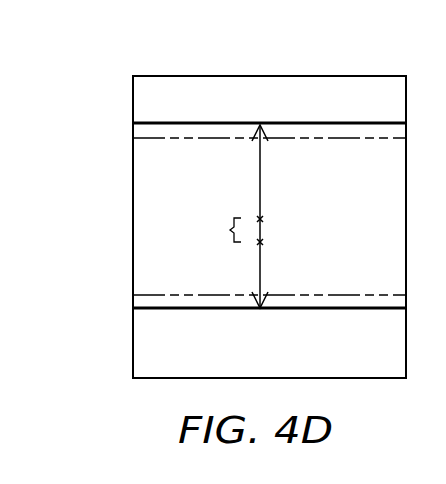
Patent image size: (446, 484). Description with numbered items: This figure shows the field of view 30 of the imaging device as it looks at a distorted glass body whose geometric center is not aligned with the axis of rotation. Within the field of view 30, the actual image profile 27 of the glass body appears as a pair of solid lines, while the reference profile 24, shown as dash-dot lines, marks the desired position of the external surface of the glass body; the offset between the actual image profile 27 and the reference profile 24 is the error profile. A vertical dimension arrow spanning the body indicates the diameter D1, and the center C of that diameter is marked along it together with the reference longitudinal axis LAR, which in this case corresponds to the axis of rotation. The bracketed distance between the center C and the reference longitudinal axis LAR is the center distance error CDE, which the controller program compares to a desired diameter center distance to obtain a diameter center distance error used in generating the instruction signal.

The field of view 30 is at (315, 76).
The actual image profile 27 is at (158, 122).
The reference profile 24 is at (150, 139).
The diameter D1 is at (262, 172).
The geometric center C is at (266, 218).
The reference longitudinal axis LAR is at (266, 243).
The center distance error CDE is at (226, 228).